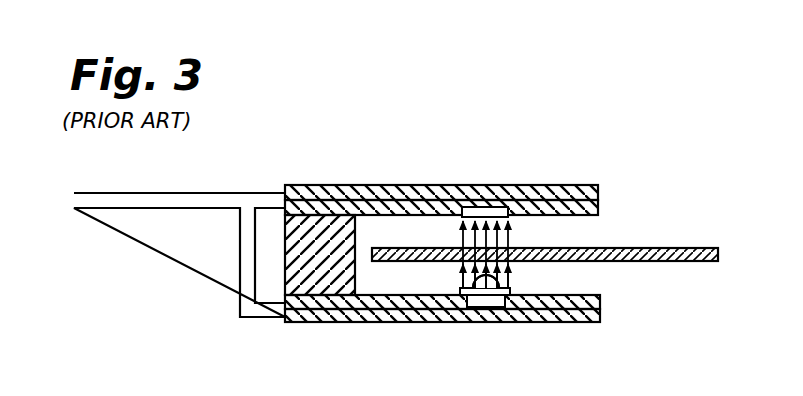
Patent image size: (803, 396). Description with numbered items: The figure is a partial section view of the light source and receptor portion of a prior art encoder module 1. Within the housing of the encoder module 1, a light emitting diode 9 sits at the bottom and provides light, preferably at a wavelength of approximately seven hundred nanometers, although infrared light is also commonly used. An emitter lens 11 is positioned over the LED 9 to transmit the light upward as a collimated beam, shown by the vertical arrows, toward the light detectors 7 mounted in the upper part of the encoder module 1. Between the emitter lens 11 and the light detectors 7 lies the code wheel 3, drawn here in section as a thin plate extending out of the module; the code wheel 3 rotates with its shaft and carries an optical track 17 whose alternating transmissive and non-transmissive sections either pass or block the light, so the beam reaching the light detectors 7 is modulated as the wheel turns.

The encoder module 1 is at (306, 335).
The code wheel 3 is at (620, 248).
The light detectors 7 is at (495, 207).
The light emitting diode 9 is at (490, 303).
The lens dome 11 is at (476, 284).
The optical track 17 is at (510, 246).